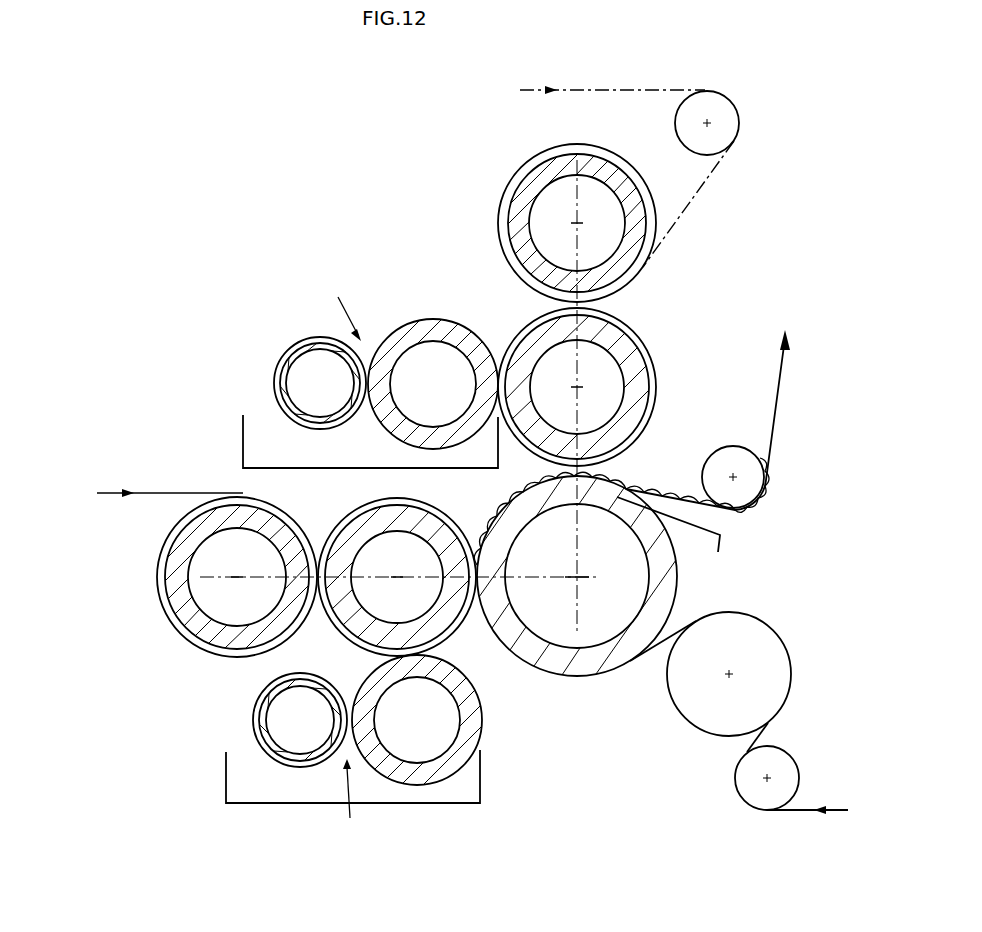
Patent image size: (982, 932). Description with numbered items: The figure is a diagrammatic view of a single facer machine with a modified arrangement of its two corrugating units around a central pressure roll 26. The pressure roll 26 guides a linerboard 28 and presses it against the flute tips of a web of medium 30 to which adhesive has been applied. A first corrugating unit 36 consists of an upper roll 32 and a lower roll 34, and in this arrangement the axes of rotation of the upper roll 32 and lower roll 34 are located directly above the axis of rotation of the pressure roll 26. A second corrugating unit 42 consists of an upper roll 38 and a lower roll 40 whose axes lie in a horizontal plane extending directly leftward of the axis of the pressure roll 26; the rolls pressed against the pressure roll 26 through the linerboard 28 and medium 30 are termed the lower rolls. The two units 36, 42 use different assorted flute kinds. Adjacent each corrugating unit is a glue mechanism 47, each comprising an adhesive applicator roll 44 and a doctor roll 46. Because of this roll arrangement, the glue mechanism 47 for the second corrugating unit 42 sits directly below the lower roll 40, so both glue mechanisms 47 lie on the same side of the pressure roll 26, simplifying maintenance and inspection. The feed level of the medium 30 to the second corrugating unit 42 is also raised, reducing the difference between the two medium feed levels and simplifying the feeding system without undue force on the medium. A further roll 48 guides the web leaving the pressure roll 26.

The pressure roll 26 is at (665, 565).
The linerboard 28 is at (795, 812).
The web of medium 30 is at (594, 90).
The upper roll 32 is at (518, 197).
The lower roll 34 is at (522, 347).
The first corrugating unit 36 is at (523, 305).
The upper roll 38 is at (188, 622).
The lower roll 40 is at (350, 620).
The second corrugating unit 42 is at (304, 630).
The adhesive applicator roll 44 is at (415, 328).
The doctor roll 46 is at (290, 362).
The glue mechanism 47 is at (346, 292).
The roller 48 is at (768, 445).